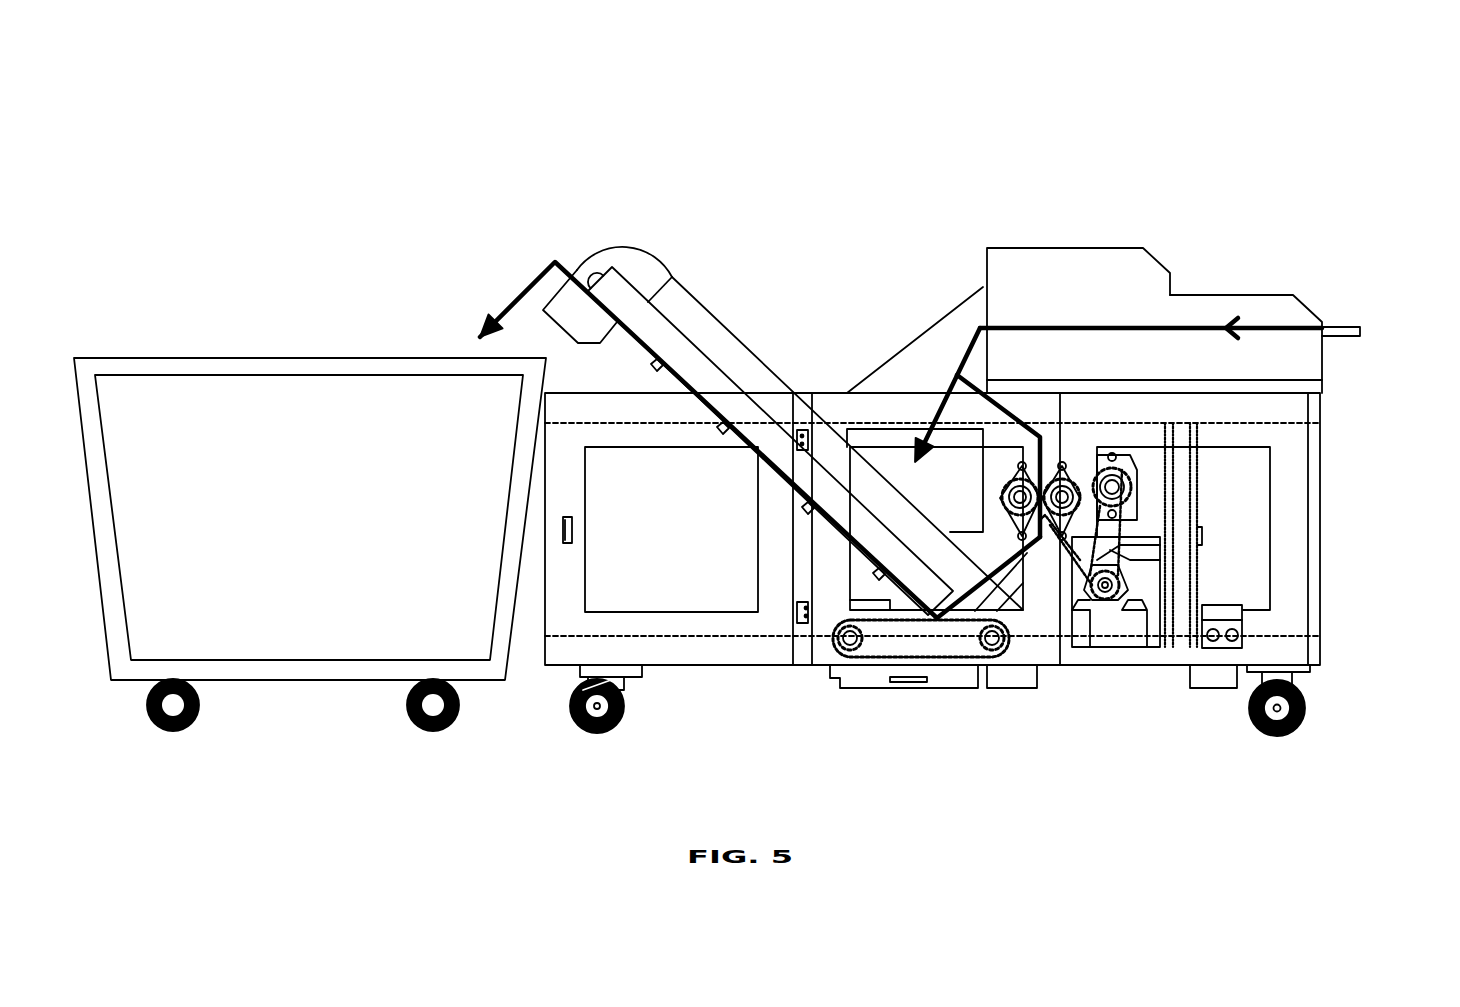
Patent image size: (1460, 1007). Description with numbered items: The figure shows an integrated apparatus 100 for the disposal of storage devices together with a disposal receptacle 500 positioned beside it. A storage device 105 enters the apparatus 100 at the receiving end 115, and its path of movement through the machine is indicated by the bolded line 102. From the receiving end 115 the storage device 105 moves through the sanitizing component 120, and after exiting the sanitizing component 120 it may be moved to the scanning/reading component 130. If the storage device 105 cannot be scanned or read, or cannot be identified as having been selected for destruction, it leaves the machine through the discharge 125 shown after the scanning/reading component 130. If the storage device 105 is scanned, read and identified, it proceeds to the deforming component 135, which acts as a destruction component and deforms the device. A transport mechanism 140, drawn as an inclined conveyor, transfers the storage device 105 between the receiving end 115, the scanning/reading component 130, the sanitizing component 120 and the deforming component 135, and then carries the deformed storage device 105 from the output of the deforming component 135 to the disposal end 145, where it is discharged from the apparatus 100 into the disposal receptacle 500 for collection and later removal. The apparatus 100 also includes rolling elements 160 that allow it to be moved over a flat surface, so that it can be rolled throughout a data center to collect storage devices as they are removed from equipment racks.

The integrated apparatus 100 is at (872, 98).
The bolded line 102 is at (1077, 327).
The storage device 105 is at (1355, 318).
The receiving end 115 is at (1238, 282).
The sanitizing component 120 is at (1085, 235).
The discharge 125 is at (960, 345).
The scanning/reading component 130 is at (922, 317).
The deforming component 135 is at (1035, 413).
The transport mechanism 140 is at (713, 303).
The disposal end 145 is at (542, 258).
The rolling elements 160 is at (1322, 700).
The disposal receptacle 500 is at (275, 345).